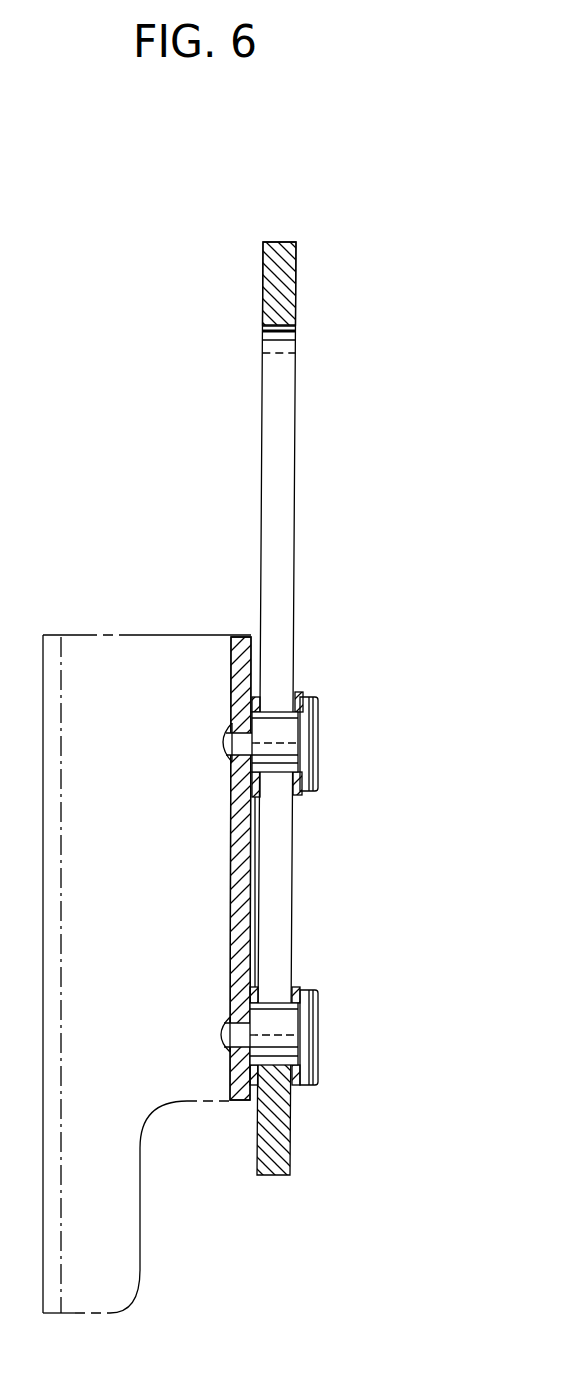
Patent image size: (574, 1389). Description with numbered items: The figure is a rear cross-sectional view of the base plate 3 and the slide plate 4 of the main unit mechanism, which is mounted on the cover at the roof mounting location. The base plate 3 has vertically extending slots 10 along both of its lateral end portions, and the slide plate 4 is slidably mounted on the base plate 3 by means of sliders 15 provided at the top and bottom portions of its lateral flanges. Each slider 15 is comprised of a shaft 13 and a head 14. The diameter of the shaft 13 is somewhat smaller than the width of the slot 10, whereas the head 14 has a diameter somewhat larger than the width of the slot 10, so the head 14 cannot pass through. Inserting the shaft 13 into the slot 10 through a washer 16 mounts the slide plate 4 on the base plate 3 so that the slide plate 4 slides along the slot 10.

The base plate 3 is at (254, 256).
The slide plate 4 is at (159, 626).
The slot 10 is at (283, 441).
The shaft 13 is at (300, 1060).
The head 14 is at (303, 1013).
The slider 15 is at (325, 740).
The washer 16 is at (297, 694).